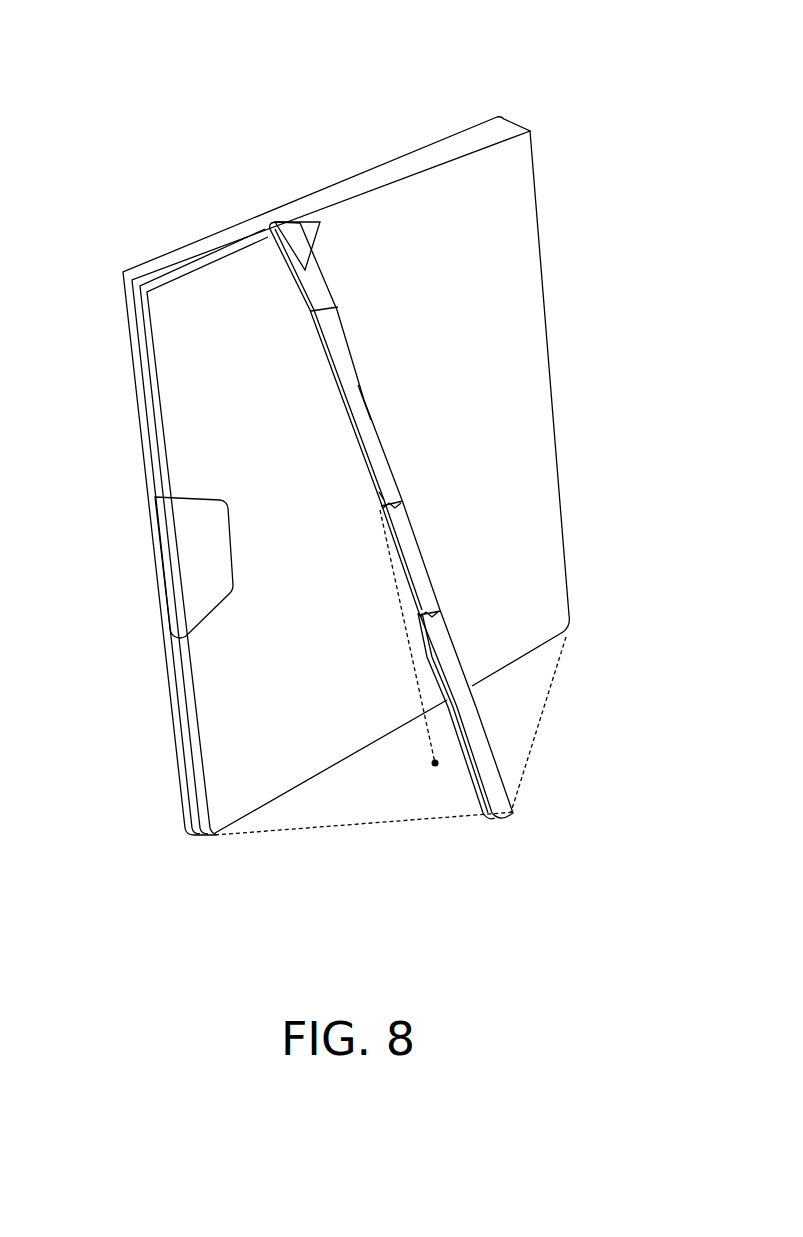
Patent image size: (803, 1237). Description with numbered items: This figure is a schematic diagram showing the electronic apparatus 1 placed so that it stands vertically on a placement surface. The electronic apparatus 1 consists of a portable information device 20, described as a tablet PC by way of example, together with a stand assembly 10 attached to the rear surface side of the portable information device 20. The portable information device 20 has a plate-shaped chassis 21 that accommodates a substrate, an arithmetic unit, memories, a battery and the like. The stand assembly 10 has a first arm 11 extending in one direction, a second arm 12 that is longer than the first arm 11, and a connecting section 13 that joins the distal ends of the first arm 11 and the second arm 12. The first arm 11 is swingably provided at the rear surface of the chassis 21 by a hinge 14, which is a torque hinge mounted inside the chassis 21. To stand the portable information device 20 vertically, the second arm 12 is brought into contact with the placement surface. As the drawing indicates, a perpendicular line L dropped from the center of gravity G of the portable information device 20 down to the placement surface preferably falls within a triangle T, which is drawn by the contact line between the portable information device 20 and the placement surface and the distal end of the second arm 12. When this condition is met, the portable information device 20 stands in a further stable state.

The electronic apparatus 1 is at (558, 66).
The portable information device 20 is at (462, 114).
The chassis 21 is at (243, 228).
The hinge 14 is at (195, 256).
The first arm 11 is at (305, 270).
The stand assembly 10 is at (355, 309).
The connecting section 13 is at (367, 410).
The second arm 12 is at (462, 759).
The center of gravity G is at (370, 490).
The triangle T is at (541, 723).
The perpendicular line L is at (408, 666).